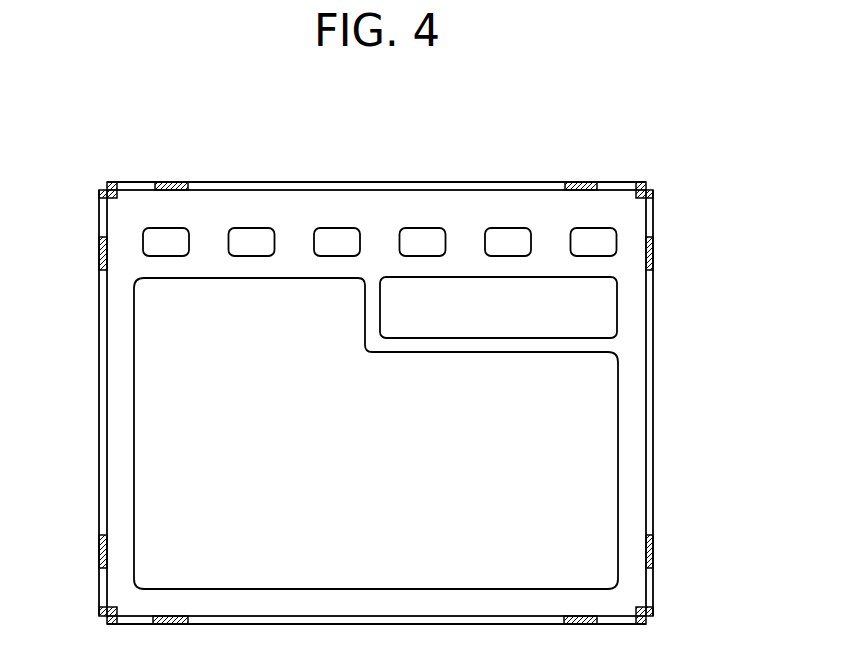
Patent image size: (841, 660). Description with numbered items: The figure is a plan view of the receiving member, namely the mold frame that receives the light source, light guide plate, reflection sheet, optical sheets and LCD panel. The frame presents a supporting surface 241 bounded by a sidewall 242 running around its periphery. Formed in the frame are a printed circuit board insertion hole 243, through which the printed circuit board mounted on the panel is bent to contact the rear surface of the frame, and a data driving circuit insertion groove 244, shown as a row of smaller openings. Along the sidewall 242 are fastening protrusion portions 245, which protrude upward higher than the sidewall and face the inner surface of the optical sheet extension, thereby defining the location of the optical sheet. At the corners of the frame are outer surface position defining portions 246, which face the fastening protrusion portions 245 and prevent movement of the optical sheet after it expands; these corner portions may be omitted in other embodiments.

The supporting surface 241 is at (518, 204).
The sidewall 242 is at (655, 333).
The printed circuit board insertion hole 243 is at (484, 284).
The data driving circuit insertion groove 244 is at (338, 236).
The fastening protrusion portion 245 is at (99, 256).
The outer surface position defining portion 246 is at (100, 191).